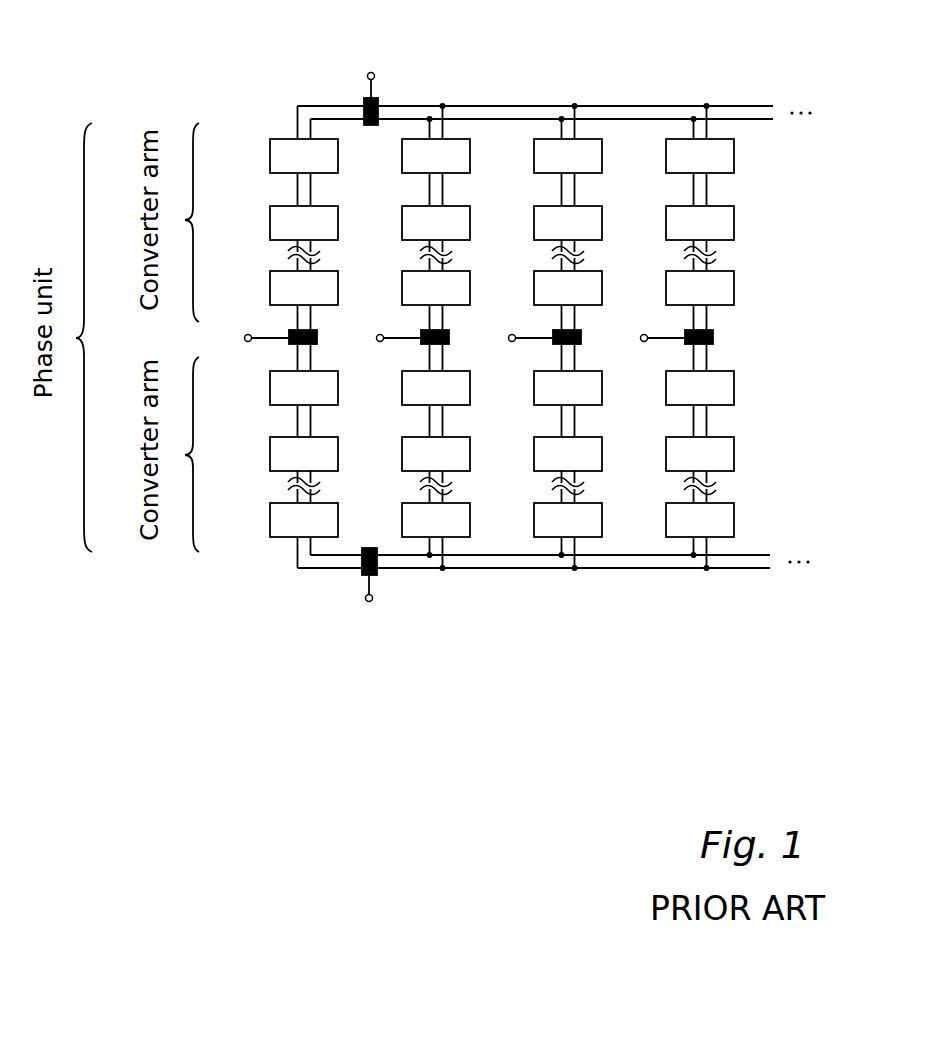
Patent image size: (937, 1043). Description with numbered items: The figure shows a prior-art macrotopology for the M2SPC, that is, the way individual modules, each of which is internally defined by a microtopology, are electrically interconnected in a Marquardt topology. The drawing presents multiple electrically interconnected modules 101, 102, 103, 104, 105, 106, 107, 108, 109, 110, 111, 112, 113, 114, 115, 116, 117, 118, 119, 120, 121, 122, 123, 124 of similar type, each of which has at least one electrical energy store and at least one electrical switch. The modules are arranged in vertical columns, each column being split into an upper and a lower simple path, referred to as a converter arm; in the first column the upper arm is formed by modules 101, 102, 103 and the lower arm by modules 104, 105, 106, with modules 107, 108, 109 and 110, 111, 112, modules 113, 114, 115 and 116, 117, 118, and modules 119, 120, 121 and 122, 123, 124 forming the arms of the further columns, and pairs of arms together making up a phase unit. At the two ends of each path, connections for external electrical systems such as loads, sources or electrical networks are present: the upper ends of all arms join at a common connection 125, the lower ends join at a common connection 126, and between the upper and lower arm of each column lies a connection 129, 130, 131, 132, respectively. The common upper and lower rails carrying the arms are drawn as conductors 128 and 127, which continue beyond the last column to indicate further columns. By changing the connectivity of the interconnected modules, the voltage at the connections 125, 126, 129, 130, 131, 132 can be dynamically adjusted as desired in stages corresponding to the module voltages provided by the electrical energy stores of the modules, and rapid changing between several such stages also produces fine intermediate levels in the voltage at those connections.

The module 101 is at (269, 153).
The module 102 is at (269, 219).
The module 103 is at (269, 286).
The module 104 is at (269, 386).
The module 105 is at (269, 449).
The module 106 is at (269, 511).
The module 107 is at (401, 153).
The module 108 is at (401, 219).
The module 109 is at (401, 286).
The module 110 is at (401, 386).
The module 111 is at (401, 449).
The module 112 is at (401, 511).
The module 113 is at (533, 153).
The module 114 is at (533, 219).
The module 115 is at (533, 286).
The module 116 is at (533, 386).
The module 117 is at (533, 449).
The module 118 is at (533, 511).
The module 119 is at (665, 153).
The module 120 is at (665, 219).
The module 121 is at (665, 286).
The module 122 is at (665, 386).
The module 123 is at (665, 449).
The module 124 is at (665, 511).
The connection 125 is at (373, 65).
The connection 126 is at (367, 608).
The DC bus conductor 127 is at (738, 119).
The DC bus conductor 128 is at (665, 106).
The connection 129 is at (244, 338).
The connection 130 is at (376, 338).
The connection 131 is at (508, 338).
The connection 132 is at (640, 338).